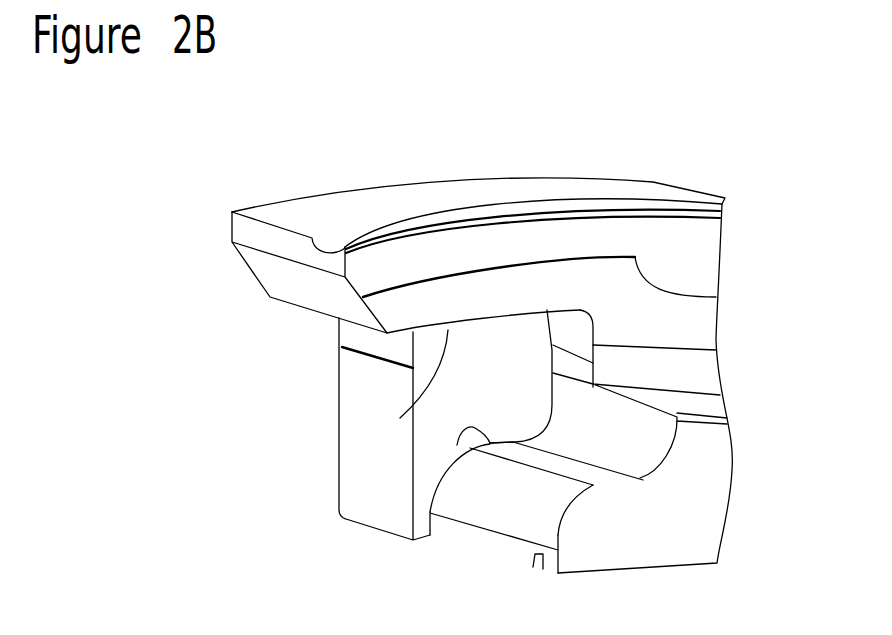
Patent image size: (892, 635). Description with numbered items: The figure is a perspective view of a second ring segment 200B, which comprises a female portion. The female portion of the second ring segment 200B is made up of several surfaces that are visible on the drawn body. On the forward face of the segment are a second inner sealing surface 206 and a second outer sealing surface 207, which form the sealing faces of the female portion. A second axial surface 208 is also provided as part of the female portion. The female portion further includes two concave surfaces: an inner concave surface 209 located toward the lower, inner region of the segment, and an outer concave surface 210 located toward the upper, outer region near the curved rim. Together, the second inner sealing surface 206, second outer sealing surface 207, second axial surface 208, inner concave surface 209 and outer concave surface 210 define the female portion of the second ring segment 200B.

The second ring segment 200B is at (211, 167).
The second inner sealing surface 206 is at (457, 445).
The second outer sealing surface 207 is at (400, 418).
The second axial surface 208 is at (420, 380).
The inner concave surface 209 is at (657, 462).
The outer concave surface 210 is at (582, 310).